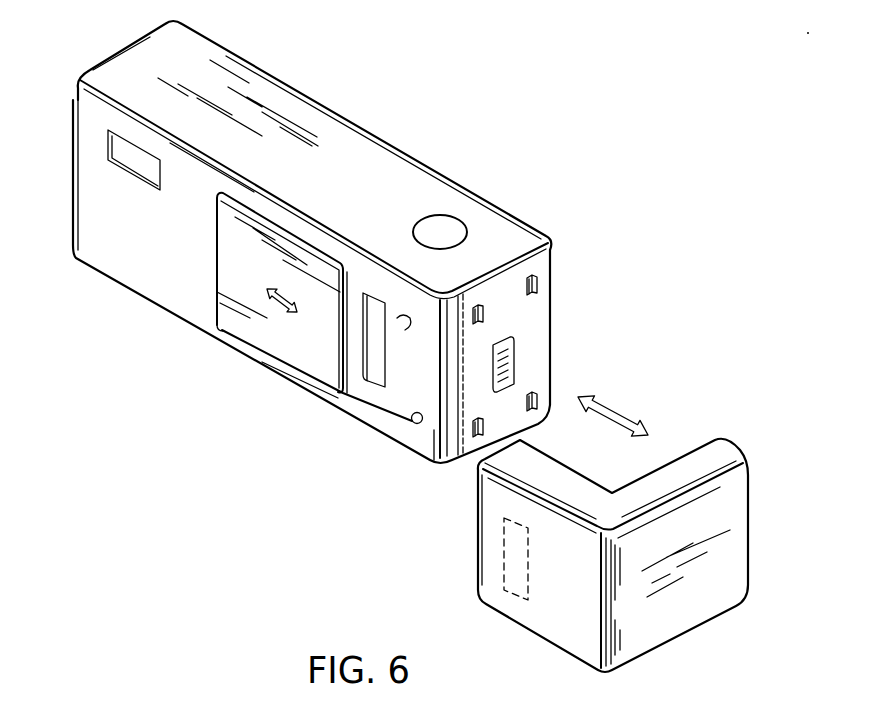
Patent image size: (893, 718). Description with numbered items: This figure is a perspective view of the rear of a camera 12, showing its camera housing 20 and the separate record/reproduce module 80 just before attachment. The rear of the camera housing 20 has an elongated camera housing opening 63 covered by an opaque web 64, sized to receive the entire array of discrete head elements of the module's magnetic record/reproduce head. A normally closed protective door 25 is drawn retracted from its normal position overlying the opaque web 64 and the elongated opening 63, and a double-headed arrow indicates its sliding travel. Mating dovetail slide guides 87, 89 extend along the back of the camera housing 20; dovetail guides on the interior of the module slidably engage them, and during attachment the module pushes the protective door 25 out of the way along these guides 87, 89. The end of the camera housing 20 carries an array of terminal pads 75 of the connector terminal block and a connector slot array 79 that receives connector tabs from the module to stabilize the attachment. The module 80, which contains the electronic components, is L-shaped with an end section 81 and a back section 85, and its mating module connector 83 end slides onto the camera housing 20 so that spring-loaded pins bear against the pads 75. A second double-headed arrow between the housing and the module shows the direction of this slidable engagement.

The camera 12 is at (60, 326).
The camera housing 20 is at (160, 282).
The protective door 25 is at (257, 332).
The elongated camera housing opening 63 is at (366, 415).
The opaque web 64 is at (374, 340).
The terminal pads 75 is at (515, 360).
The connector slot array 79 is at (484, 310).
The record/reproduce module 80 is at (780, 568).
The end section 81 is at (570, 624).
The mating module connector 83 is at (693, 450).
The back section 85 is at (749, 510).
The dovetail slide guide 87 is at (420, 428).
The dovetail slide guide 89 is at (398, 316).